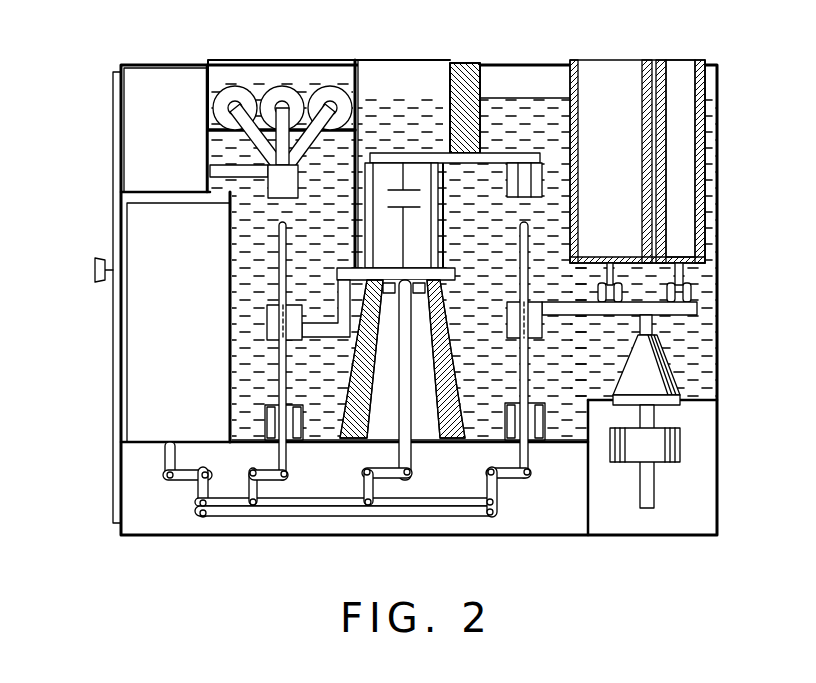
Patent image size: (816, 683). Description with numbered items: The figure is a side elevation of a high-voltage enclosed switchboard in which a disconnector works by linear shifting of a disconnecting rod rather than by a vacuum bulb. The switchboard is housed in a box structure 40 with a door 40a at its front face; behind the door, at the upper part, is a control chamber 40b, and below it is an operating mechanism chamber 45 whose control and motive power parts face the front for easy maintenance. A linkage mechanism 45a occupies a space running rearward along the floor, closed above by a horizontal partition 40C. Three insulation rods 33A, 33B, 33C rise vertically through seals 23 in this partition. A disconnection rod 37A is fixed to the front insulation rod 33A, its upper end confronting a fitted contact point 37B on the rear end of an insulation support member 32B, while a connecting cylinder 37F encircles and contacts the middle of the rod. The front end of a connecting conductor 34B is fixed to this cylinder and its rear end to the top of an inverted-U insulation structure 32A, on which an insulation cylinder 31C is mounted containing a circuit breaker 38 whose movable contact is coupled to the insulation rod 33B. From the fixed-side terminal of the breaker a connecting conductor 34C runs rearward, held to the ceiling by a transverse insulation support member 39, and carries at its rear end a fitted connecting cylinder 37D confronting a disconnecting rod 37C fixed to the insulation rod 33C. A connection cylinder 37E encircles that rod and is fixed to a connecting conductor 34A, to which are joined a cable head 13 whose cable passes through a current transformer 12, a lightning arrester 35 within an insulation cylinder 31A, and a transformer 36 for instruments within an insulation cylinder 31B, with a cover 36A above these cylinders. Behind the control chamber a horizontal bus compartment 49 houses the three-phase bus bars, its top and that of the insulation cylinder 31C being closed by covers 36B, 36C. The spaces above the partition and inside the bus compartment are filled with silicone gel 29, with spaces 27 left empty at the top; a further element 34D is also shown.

The current transformer 12 is at (675, 462).
The cable head 13 is at (668, 367).
The seals 23 is at (228, 422).
The spaces 27 is at (373, 72).
The silicone gel 29 is at (530, 98).
The insulation cylinder 31A is at (705, 125).
The insulation cylinder 31B is at (648, 82).
The insulation cylinder 31C is at (370, 138).
The insulation structure 32A is at (460, 430).
The insulation support member 32B is at (220, 182).
The insulation rod 33A is at (280, 400).
The insulation rod 33B is at (405, 410).
The insulation rod 33C is at (525, 452).
The connecting conductor 34A is at (697, 308).
The connecting conductor 34B is at (338, 278).
The connecting conductor 34C is at (497, 157).
The roller arm 34D is at (240, 142).
The lightning arrester 35 is at (685, 195).
The transformer for instruments 36 is at (592, 77).
The cover 36A is at (688, 60).
The cover 36B is at (280, 60).
The cover 36C is at (412, 60).
The disconnection rod 37A is at (278, 238).
The fitted contact point 37B is at (290, 198).
The disconnecting rod 37C is at (520, 238).
The fitted connecting cylinder 37D is at (517, 180).
The connection cylinder 37E is at (545, 327).
The connecting cylinder 37F is at (273, 323).
The circuit breaker 38 is at (382, 187).
The insulation support member 39 is at (465, 85).
The box structure 40 is at (663, 540).
The door 40a is at (113, 122).
The control chamber 40b is at (163, 73).
The horizontal partition 40C is at (322, 443).
The operating mechanism chamber 45 is at (127, 343).
The linkage mechanism 45a is at (228, 516).
The horizontal bus compartment 49 is at (232, 72).